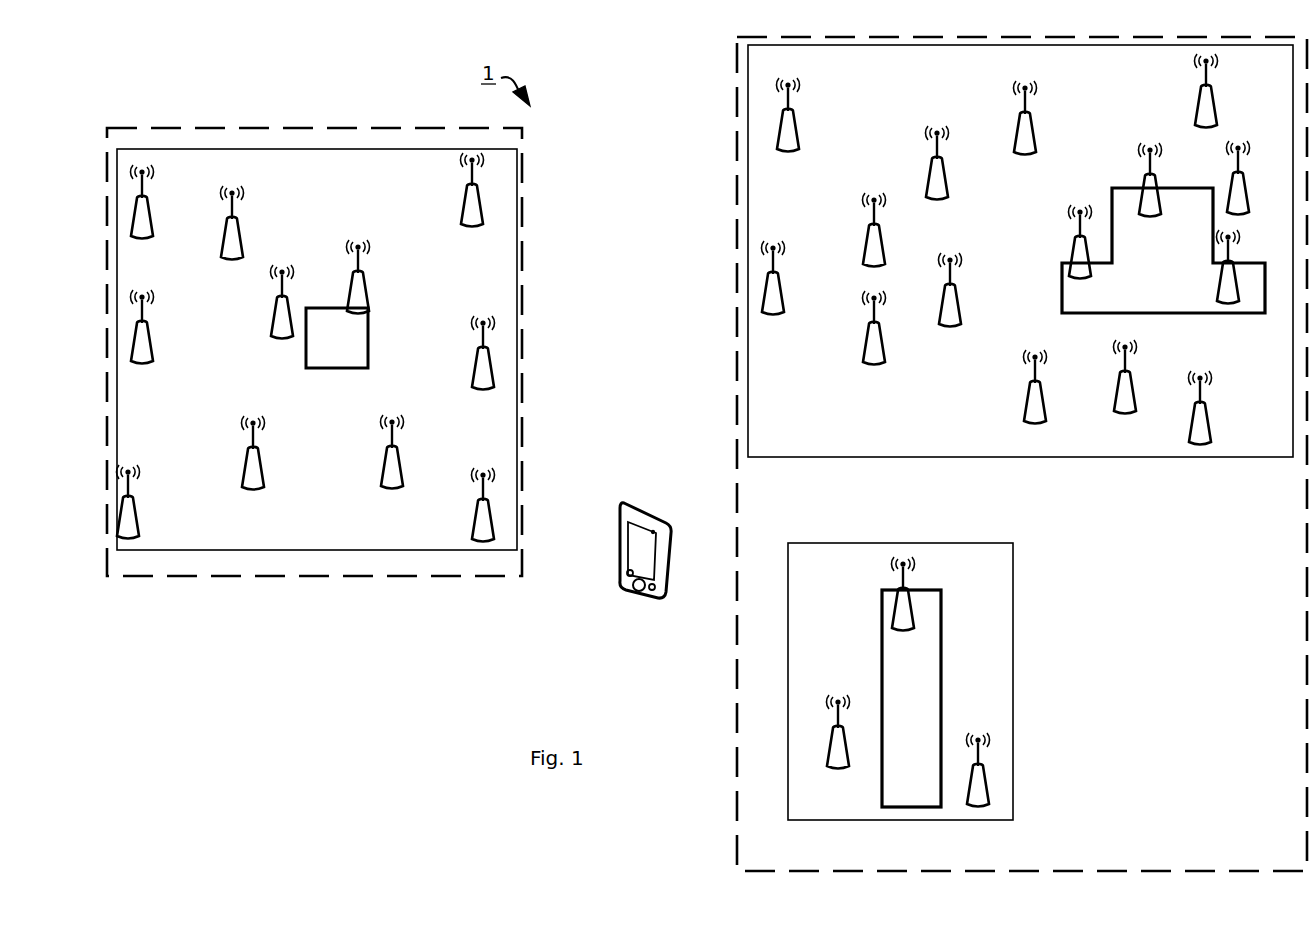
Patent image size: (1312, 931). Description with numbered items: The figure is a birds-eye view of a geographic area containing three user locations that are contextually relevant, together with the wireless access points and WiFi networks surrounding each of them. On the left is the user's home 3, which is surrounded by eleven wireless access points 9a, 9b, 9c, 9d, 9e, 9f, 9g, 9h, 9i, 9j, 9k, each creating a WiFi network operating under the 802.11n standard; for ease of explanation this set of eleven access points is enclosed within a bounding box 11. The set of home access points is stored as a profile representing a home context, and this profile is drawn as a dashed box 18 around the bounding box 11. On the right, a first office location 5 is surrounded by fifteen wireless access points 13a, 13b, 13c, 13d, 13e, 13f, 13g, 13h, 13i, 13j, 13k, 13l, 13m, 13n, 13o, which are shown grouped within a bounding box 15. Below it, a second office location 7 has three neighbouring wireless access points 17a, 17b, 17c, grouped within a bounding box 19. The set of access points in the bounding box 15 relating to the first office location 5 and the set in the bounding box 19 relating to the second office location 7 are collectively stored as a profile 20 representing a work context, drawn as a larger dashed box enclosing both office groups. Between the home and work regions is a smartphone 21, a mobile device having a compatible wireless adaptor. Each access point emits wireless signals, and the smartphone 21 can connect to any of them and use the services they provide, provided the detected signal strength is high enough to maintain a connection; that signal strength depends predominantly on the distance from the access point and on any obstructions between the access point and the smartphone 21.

The user's home 3 is at (337, 338).
The first office location 5 is at (1163, 250).
The second office location 7 is at (911, 698).
The wireless access point 9a is at (367, 290).
The wireless access point 9b is at (270, 335).
The wireless access point 9c is at (240, 228).
The wireless access point 9d is at (392, 490).
The wireless access point 9e is at (243, 472).
The wireless access point 9f is at (473, 370).
The wireless access point 9g is at (150, 338).
The wireless access point 9h is at (150, 208).
The wireless access point 9i is at (462, 205).
The wireless access point 9j is at (473, 513).
The wireless access point 9k is at (137, 515).
The bounding box 11 is at (325, 550).
The wireless access point 13a is at (1070, 258).
The wireless access point 13b is at (1142, 178).
The wireless access point 13c is at (1232, 300).
The wireless access point 13d is at (1245, 178).
The wireless access point 13e is at (1215, 95).
The wireless access point 13f is at (1133, 385).
The wireless access point 13g is at (1208, 412).
The wireless access point 13h is at (1033, 120).
The wireless access point 13i is at (1043, 392).
The wireless access point 13j is at (958, 298).
The wireless access point 13k is at (945, 165).
The wireless access point 13l is at (876, 363).
The wireless access point 13m is at (866, 245).
The wireless access point 13n is at (775, 313).
The wireless access point 13o is at (797, 118).
The bounding box 15 is at (858, 457).
The wireless access point 17a is at (830, 760).
The wireless access point 17b is at (980, 805).
The wireless access point 17c is at (890, 618).
The dashed box 18 is at (522, 243).
The bounding box 19 is at (1013, 543).
The profile 20 is at (737, 470).
The smartphone 21 is at (645, 600).